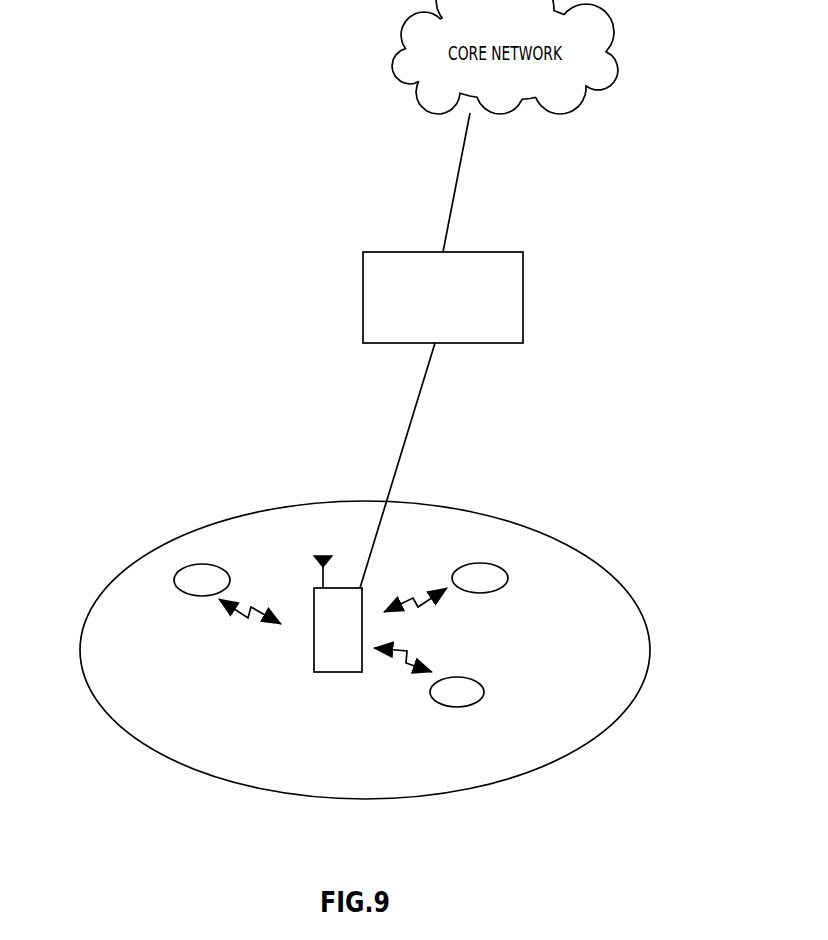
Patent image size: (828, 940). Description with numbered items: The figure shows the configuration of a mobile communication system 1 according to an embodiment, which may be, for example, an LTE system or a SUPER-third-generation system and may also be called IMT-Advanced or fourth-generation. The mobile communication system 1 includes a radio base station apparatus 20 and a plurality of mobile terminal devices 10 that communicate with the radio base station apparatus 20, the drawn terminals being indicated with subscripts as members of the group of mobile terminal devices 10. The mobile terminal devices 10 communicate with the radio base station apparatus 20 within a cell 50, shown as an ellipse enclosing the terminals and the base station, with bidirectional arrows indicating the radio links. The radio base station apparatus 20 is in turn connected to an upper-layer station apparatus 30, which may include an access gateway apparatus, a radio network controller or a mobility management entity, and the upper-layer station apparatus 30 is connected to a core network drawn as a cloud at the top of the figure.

The mobile communication system 1 is at (228, 236).
The mobile terminal device 10 is at (181, 593).
The radio base station apparatus 20 is at (314, 656).
The upper-layer station apparatus 30 is at (523, 285).
The cell 50 is at (525, 523).